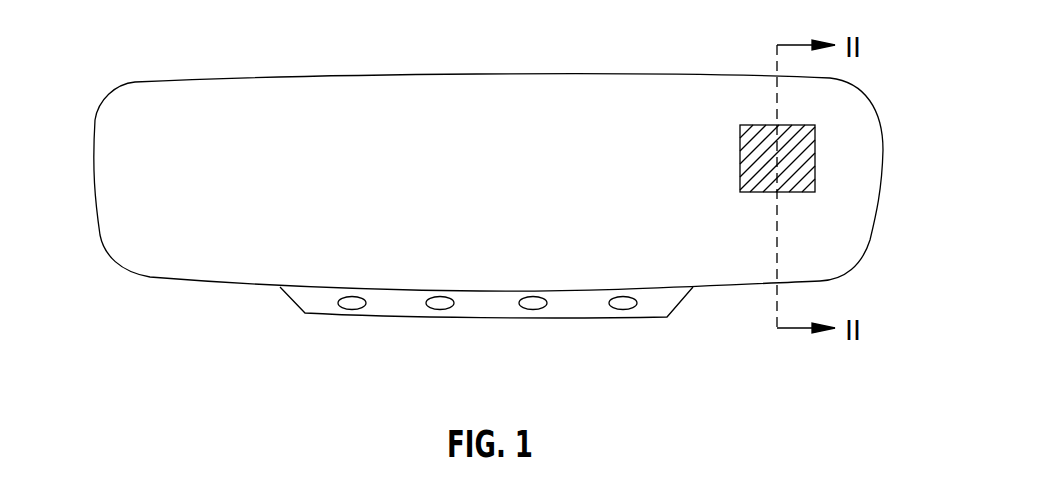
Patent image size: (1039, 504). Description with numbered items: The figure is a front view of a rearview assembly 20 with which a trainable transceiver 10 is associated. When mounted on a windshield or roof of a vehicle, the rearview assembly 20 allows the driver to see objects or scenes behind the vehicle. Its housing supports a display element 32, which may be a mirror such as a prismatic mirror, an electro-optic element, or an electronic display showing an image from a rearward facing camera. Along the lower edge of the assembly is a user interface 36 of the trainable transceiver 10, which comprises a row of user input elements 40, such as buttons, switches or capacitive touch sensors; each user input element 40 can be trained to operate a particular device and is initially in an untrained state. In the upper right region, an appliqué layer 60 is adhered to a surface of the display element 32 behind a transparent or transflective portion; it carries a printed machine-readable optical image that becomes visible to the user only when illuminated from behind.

The trainable transceiver 10 is at (148, 55).
The rearview assembly 20 is at (132, 82).
The display element 32 is at (159, 222).
The user interface 36 is at (317, 303).
The user input element 40 is at (517, 302).
The appliqué layer 60 is at (800, 155).